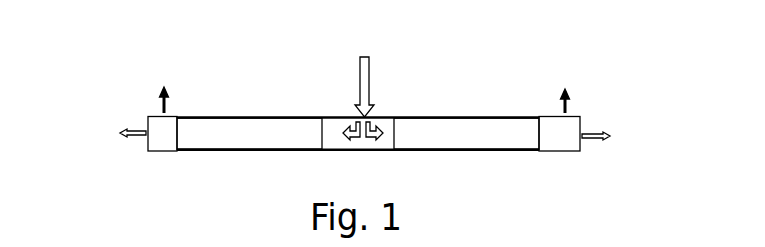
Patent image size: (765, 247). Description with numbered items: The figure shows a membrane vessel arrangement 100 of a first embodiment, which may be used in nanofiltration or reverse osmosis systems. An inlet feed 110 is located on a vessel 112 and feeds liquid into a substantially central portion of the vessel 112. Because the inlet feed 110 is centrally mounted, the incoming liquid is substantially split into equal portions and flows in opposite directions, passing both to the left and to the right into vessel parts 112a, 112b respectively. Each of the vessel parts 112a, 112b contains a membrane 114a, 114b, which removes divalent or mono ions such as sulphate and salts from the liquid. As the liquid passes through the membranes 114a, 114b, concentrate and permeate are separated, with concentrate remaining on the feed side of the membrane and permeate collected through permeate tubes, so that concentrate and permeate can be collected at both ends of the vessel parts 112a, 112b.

The membrane vessel arrangement 100 is at (433, 62).
The inlet feed 110 is at (366, 67).
The vessel 112 is at (333, 105).
The vessel part 112a is at (271, 105).
The vessel part 112b is at (490, 83).
The membrane 114a is at (232, 146).
The membrane 114b is at (466, 148).